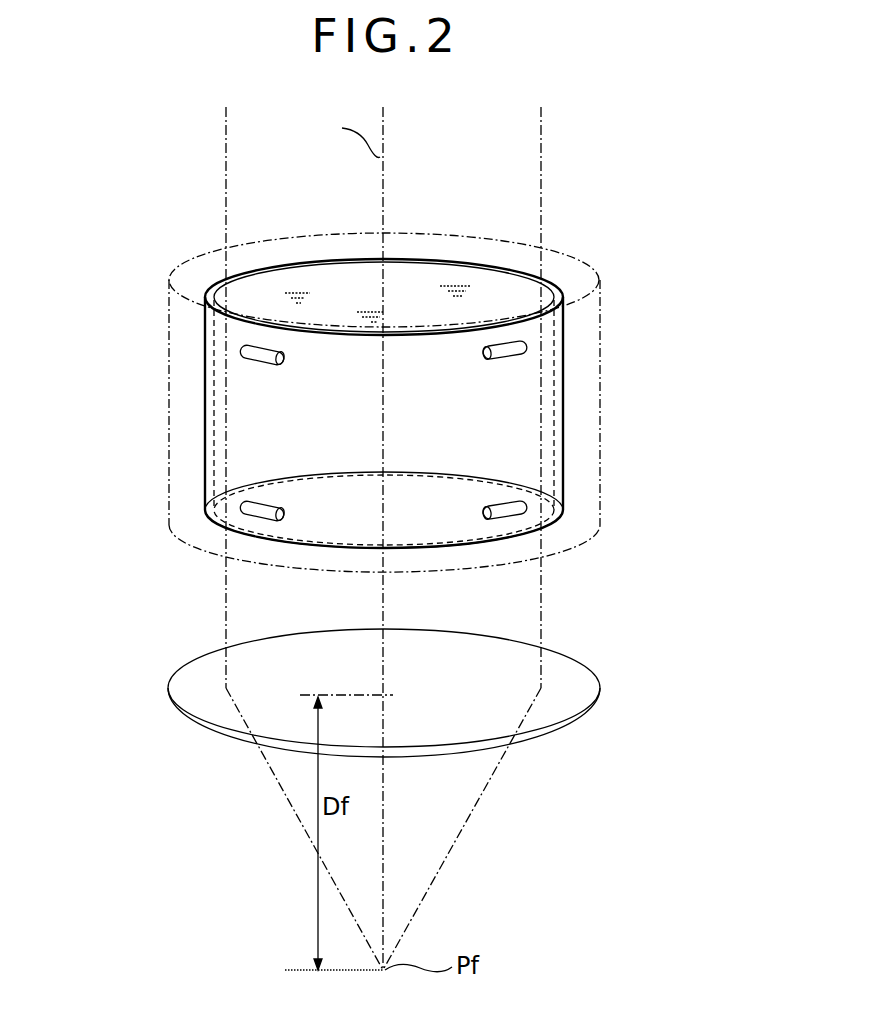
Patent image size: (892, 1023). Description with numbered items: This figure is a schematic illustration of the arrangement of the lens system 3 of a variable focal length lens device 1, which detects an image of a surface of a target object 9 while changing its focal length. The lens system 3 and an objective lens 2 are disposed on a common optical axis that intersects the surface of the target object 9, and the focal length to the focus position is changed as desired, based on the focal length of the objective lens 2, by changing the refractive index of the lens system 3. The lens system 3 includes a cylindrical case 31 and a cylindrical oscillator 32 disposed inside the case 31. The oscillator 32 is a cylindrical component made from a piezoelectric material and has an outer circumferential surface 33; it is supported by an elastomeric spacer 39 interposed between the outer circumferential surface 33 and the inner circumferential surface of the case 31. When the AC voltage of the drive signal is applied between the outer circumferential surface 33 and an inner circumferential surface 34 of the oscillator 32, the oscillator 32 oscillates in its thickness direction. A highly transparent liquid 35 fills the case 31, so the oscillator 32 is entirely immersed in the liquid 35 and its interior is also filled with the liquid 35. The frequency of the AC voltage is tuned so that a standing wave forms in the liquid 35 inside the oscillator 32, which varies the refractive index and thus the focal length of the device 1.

The variable focal length lens device 1 is at (426, 534).
The objective lens 2 is at (158, 676).
The lens system 3 is at (350, 369).
The target object 9 is at (290, 968).
The cylindrical case 31 is at (169, 362).
The cylindrical oscillator 32 is at (205, 432).
The outer circumferential surface 33 is at (565, 266).
The inner circumferential surface 34 is at (501, 300).
The highly transparent liquid 35 is at (450, 285).
The elastomeric spacer 39 is at (262, 506).